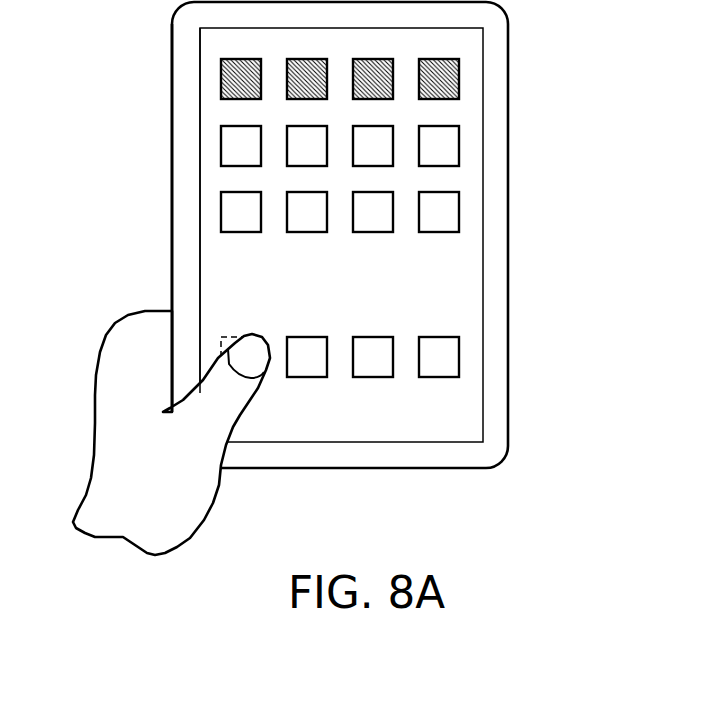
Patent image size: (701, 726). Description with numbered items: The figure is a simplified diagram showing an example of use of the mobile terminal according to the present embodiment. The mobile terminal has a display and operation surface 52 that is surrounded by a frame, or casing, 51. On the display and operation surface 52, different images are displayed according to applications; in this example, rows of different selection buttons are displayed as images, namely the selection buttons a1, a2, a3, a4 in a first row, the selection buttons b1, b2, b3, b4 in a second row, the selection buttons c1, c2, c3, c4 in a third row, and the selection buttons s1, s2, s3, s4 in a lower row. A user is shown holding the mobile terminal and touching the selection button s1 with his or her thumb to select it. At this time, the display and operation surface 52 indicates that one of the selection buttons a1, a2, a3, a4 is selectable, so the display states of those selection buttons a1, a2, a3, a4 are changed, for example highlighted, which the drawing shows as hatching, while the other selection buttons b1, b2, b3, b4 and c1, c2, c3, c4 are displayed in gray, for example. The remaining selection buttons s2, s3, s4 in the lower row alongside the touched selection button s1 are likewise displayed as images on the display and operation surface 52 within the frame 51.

The frame 51 is at (510, 212).
The display and operation surface 52 is at (468, 270).
The selection button a1 is at (241, 67).
The selection button a2 is at (307, 67).
The selection button a3 is at (373, 67).
The selection button a4 is at (439, 67).
The selection button b1 is at (241, 134).
The selection button b2 is at (307, 134).
The selection button b3 is at (373, 134).
The selection button b4 is at (439, 134).
The selection button c1 is at (241, 200).
The selection button c2 is at (307, 200).
The selection button c3 is at (373, 200).
The selection button c4 is at (439, 200).
The selection button s1 is at (241, 345).
The selection button s2 is at (307, 345).
The selection button s3 is at (373, 345).
The selection button s4 is at (439, 345).